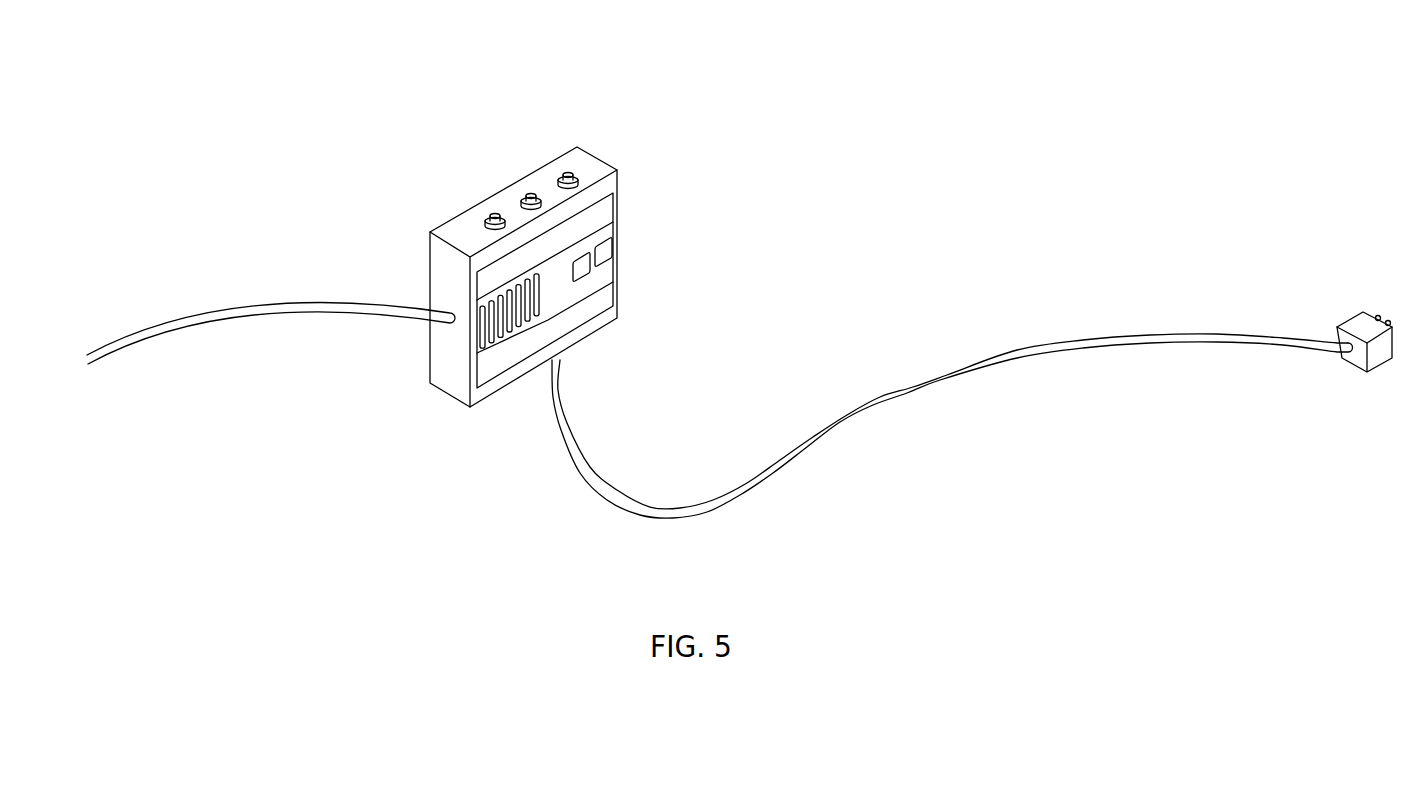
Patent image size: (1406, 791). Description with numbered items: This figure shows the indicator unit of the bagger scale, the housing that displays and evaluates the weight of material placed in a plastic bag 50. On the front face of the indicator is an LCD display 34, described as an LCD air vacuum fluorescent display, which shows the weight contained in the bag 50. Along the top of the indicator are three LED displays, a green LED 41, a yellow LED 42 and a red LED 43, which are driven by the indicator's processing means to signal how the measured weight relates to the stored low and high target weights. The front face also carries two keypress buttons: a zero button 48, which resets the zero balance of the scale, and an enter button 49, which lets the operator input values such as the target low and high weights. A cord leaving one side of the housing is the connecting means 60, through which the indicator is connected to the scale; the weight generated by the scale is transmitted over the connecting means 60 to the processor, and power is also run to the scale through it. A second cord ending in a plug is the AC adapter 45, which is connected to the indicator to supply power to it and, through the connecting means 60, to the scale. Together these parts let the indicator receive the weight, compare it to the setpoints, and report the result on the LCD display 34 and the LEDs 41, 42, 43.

The bag 50 is at (453, 369).
The LCD display 34 is at (548, 320).
The green LED display 41 is at (495, 213).
The yellow LED display 42 is at (531, 193).
The red LED display 43 is at (568, 172).
The zero button 48 is at (583, 270).
The enter button 49 is at (603, 248).
The connecting means 60 is at (212, 315).
The AC adapter 45 is at (912, 395).